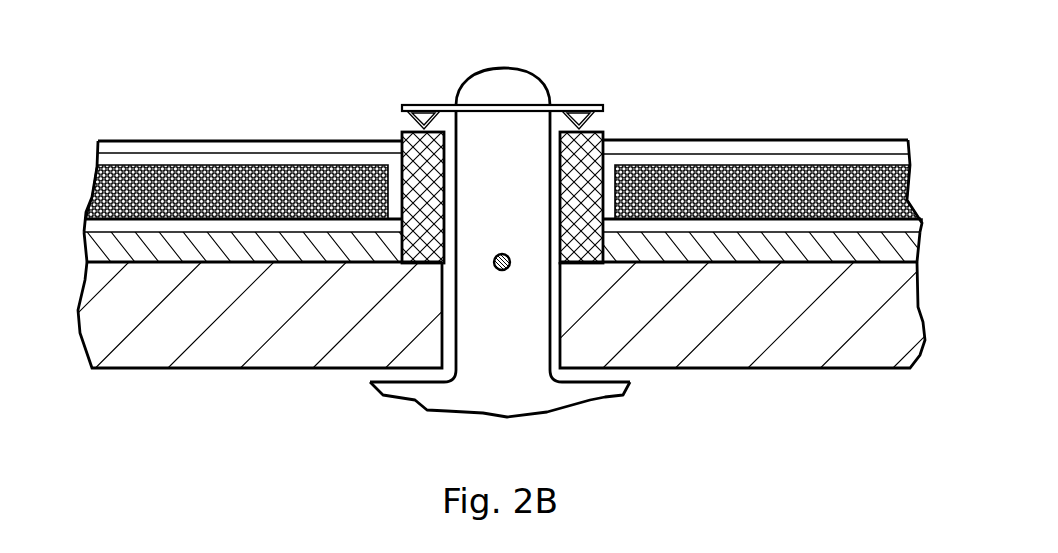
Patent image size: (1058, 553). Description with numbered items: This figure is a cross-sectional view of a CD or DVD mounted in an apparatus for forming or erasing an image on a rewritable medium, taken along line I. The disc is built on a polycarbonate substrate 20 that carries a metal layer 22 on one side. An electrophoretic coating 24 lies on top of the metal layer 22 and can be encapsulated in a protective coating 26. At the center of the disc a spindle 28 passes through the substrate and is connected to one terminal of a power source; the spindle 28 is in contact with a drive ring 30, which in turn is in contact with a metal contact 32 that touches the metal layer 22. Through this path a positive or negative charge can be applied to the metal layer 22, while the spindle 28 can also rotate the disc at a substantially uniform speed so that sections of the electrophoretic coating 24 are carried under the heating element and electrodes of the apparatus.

The polycarbonate substrate 20 is at (222, 352).
The metal layer 22 is at (245, 259).
The electrophoretic coating 24 is at (768, 204).
The protective coating 26 is at (664, 222).
The spindle 28 is at (484, 69).
The drive ring 30 is at (581, 105).
The metal contact 32 is at (588, 150).
The line I is at (497, 253).